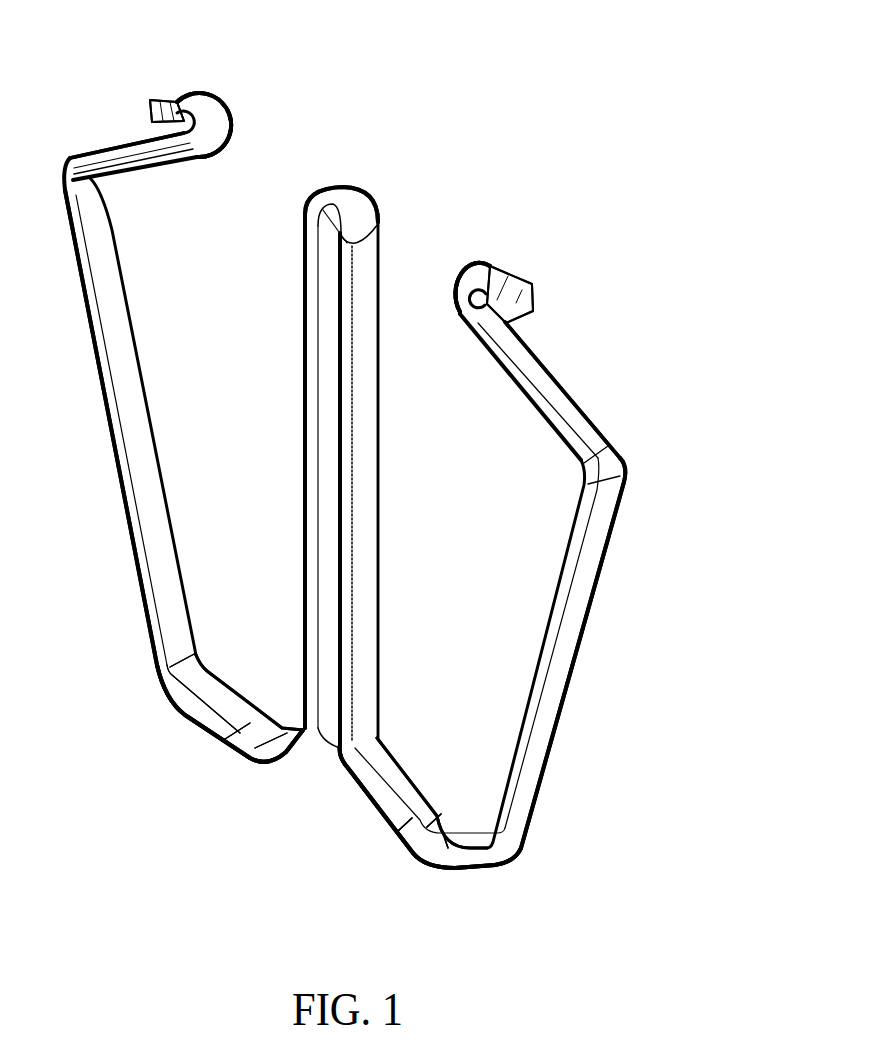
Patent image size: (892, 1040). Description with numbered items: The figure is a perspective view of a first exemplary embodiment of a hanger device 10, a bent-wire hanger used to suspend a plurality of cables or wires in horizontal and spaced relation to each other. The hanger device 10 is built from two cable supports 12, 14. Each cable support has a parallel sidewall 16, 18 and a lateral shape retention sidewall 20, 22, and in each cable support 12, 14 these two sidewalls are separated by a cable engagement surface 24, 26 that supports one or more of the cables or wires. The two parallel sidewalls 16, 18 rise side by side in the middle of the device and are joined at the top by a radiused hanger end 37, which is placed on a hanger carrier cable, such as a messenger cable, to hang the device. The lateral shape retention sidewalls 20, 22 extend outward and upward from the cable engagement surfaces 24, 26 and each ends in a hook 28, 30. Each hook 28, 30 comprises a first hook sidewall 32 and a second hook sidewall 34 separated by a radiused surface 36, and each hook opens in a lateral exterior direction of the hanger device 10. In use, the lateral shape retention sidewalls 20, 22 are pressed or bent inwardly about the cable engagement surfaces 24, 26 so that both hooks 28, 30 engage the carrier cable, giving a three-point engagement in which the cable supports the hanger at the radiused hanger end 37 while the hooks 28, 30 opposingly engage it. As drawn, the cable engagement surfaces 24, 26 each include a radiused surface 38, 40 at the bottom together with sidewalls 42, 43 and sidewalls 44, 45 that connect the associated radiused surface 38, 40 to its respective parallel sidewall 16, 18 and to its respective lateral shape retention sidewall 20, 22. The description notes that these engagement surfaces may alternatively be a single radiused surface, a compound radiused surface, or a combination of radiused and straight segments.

The hanger device 10 is at (633, 253).
The cable support 12 is at (220, 768).
The cable support 14 is at (412, 870).
The parallel sidewall 16 is at (313, 500).
The parallel sidewall 18 is at (373, 492).
The lateral shape retention sidewall 20 is at (122, 370).
The lateral shape retention sidewall 22 is at (578, 643).
The cable engagement surface 24 is at (255, 708).
The cable engagement surface 26 is at (443, 820).
The hook 28 is at (226, 92).
The hook 30 is at (500, 258).
The first hook sidewall 32 is at (115, 143).
The second hook sidewall 34 is at (178, 90).
The radiused surface 36 is at (228, 142).
The radiused hanger end 37 is at (350, 210).
The radiused surface 38 is at (249, 760).
The radiused surface 40 is at (392, 836).
The sidewall 42 is at (193, 697).
The sidewall 43 is at (289, 755).
The sidewall 44 is at (385, 772).
The sidewall 45 is at (467, 833).